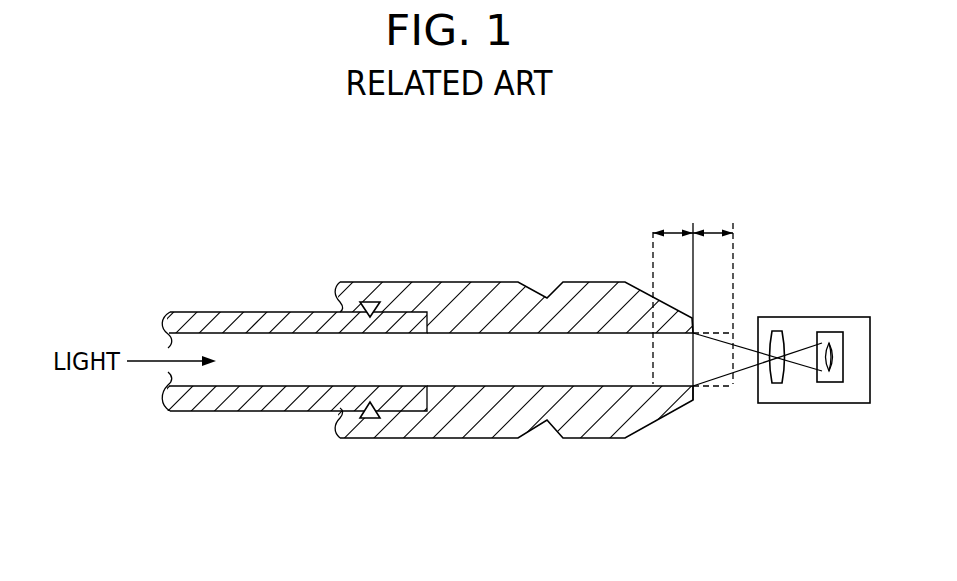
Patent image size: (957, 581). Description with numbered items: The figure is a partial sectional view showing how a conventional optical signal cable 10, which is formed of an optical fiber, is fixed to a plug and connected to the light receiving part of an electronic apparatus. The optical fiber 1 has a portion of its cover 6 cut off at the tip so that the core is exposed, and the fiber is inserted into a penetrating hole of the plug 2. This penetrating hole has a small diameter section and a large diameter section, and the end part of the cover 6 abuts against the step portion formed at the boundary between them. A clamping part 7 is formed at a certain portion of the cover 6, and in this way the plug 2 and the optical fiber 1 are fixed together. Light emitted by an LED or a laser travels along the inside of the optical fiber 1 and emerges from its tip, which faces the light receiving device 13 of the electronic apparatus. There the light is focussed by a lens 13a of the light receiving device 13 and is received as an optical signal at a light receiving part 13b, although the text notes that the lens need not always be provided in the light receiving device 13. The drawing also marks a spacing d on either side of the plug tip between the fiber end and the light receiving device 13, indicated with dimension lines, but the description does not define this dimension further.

The optical signal cable 10 is at (202, 258).
The optical fiber 1 is at (166, 355).
The cover 6 is at (246, 411).
The plug 2 is at (473, 297).
The clamping part 7 is at (372, 301).
The distance d is at (693, 300).
The light receiving device 13 is at (843, 317).
The lens 13a is at (777, 384).
The light receiving part 13b is at (833, 383).